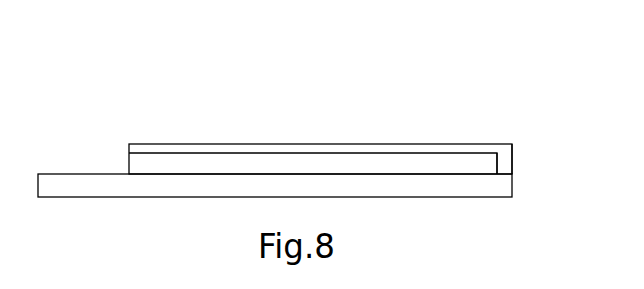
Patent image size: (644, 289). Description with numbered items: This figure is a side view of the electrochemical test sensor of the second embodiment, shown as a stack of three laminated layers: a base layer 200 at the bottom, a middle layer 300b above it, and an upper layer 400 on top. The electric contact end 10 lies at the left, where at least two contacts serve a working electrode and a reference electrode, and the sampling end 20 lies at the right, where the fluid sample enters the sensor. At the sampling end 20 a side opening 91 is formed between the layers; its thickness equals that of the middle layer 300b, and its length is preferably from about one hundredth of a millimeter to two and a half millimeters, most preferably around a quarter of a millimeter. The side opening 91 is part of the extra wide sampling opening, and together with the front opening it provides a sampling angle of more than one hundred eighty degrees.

The electric contact end 10 is at (319, 119).
The sampling end 20 is at (367, 102).
The side opening 91 is at (505, 158).
The base layer 200 is at (310, 197).
The middle layer 300b is at (367, 165).
The upper layer 400 is at (356, 142).